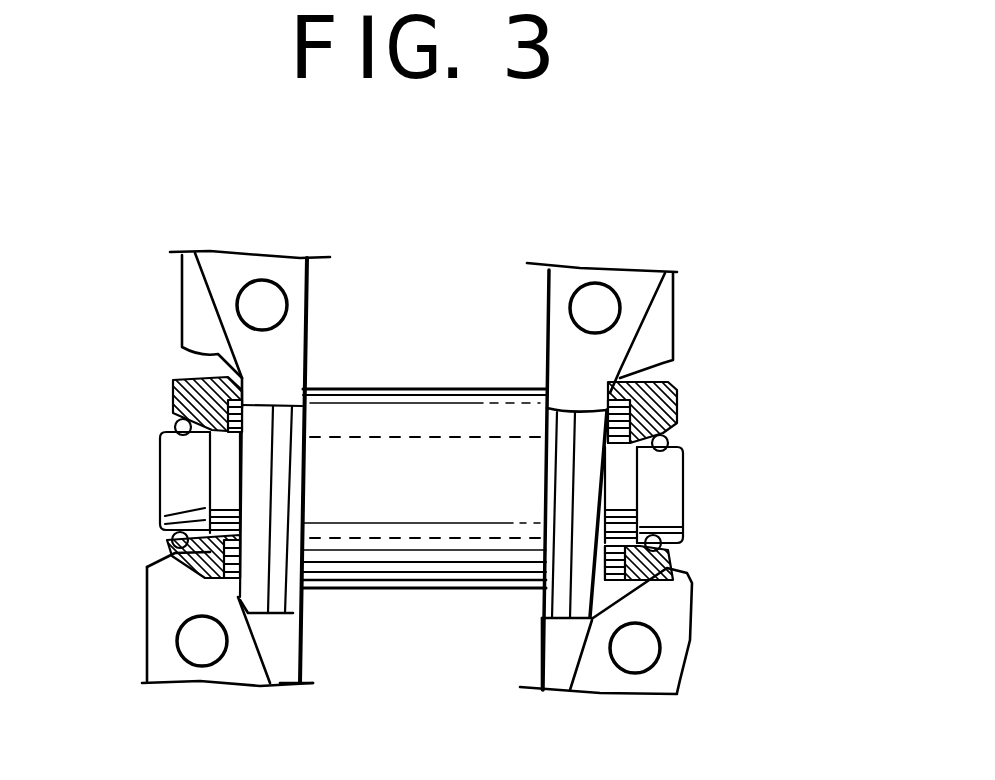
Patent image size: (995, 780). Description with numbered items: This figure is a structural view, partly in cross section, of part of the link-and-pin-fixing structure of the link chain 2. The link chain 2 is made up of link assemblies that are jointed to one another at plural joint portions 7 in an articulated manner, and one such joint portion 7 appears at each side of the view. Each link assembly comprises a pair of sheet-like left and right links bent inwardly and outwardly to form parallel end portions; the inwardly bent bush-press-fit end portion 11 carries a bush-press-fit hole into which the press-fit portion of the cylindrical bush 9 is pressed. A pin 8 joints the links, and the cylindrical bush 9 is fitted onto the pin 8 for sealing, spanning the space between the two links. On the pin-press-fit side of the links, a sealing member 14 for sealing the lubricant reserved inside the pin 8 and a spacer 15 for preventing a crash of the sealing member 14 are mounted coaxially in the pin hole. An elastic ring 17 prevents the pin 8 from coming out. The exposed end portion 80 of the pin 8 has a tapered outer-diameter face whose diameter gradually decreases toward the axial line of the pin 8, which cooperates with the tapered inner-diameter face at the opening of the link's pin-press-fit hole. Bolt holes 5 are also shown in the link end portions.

The link chain 2 is at (785, 352).
The bolt holes 5 is at (258, 300).
The joint portion 7 is at (497, 565).
The pin 8 is at (198, 478).
The cylindrical bush 9 is at (428, 585).
The bush-press-fit end portion 11 is at (290, 612).
The sealing member 14 is at (162, 560).
The spacer 15 is at (173, 403).
The elastic ring 17 is at (675, 432).
The exposed end portion 80 is at (647, 488).